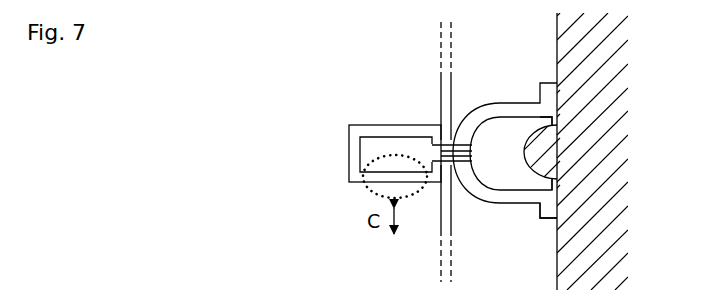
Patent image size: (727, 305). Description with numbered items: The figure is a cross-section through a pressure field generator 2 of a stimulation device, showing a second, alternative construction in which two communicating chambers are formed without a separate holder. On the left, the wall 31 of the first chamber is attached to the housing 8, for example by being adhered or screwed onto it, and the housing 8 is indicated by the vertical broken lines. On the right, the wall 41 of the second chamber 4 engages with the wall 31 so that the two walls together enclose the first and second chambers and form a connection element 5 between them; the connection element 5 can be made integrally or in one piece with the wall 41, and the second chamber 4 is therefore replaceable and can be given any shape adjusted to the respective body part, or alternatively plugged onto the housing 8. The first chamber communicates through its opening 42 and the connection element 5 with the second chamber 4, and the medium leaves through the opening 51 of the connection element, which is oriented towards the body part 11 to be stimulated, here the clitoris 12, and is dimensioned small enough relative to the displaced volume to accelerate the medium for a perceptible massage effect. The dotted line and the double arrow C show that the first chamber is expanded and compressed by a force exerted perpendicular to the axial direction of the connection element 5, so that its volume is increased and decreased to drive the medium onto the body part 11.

The body part 11 is at (602, 42).
The clitoris 12 is at (545, 143).
The housing 8 is at (441, 99).
The wall of first chamber 31 is at (355, 158).
The opening of connection element to second chamber 51 is at (470, 151).
The connection element 5 is at (453, 158).
The second chamber 4 is at (497, 157).
The opening of first chamber 42 is at (547, 122).
The wall of second chamber 41 is at (547, 205).
The pressure field generator 2 is at (317, 225).